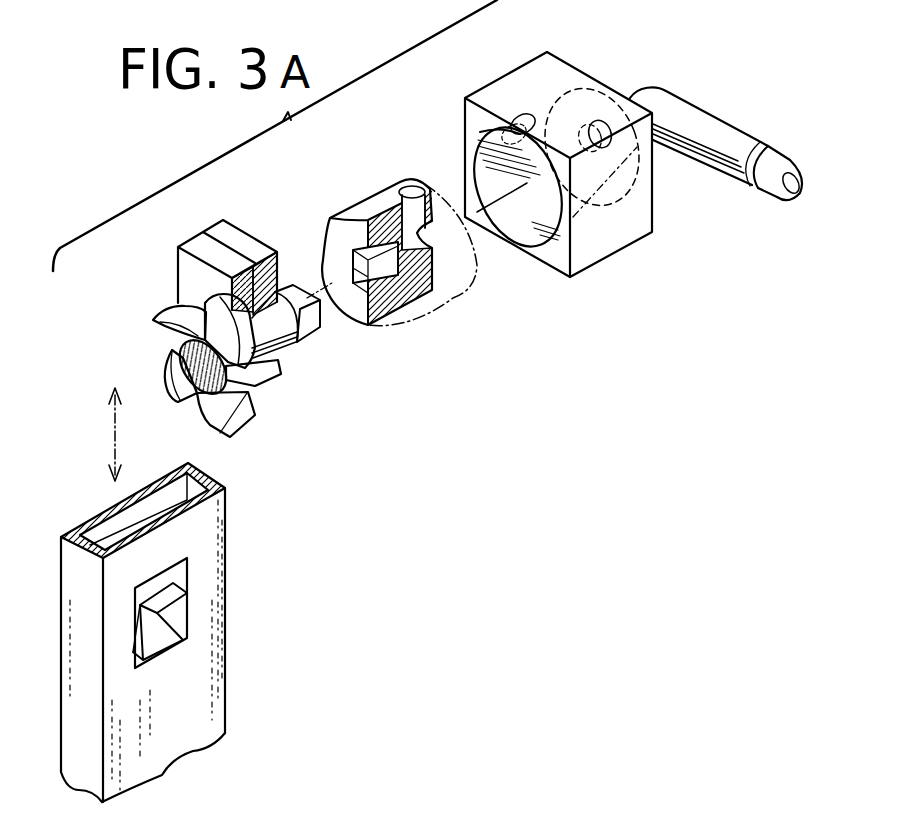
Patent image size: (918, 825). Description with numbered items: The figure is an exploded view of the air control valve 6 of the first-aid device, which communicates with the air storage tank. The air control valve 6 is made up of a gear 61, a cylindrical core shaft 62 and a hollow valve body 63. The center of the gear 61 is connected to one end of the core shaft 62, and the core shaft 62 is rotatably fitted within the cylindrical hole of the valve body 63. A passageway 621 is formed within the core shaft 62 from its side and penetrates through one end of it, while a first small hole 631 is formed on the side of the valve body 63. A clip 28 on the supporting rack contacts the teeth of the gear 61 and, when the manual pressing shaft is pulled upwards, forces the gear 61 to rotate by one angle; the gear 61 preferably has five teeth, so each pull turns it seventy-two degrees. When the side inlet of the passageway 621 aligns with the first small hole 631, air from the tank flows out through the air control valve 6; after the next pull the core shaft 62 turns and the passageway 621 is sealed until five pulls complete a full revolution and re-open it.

The air control valve 6 is at (465, 445).
The clip 28 is at (173, 610).
The gear 61 is at (165, 323).
The cylindrical core shaft 62 is at (358, 306).
The passageway 621 is at (410, 187).
The hollow valve body 63 is at (563, 260).
The first small hole 631 is at (505, 122).